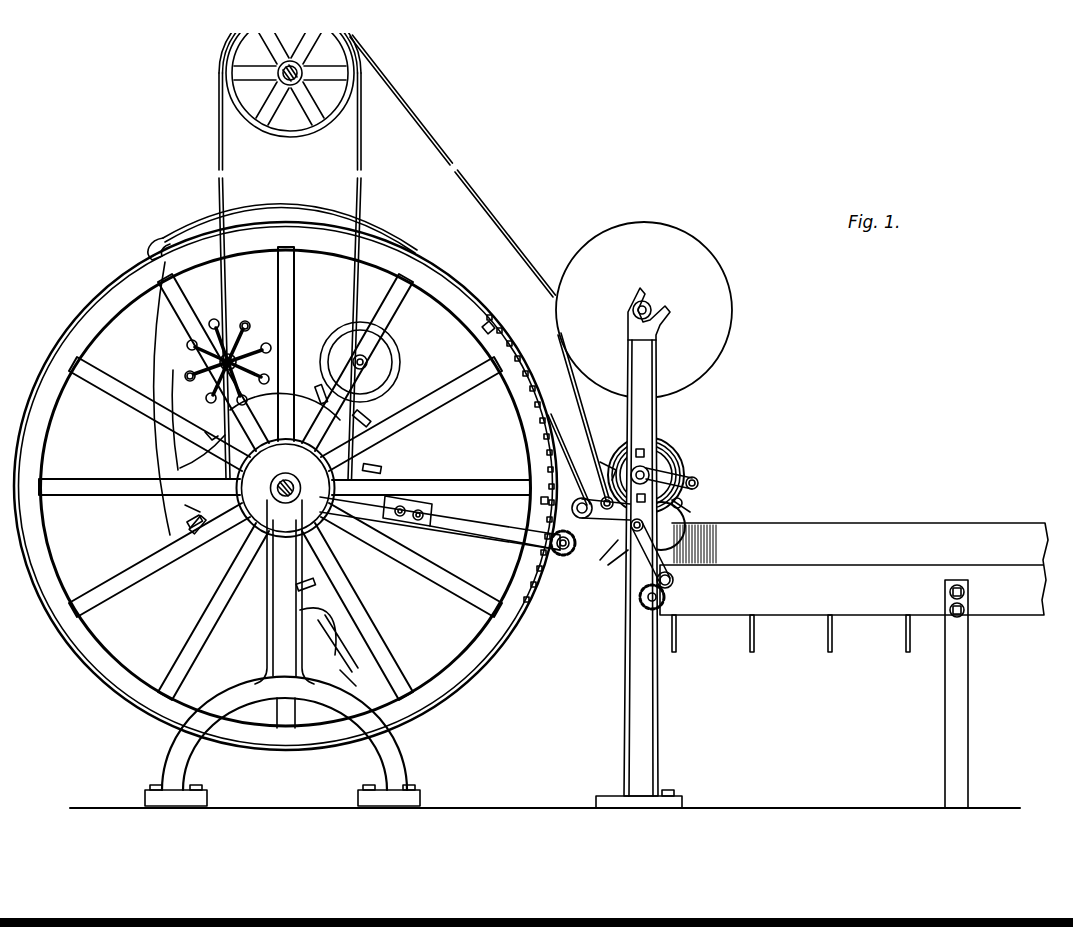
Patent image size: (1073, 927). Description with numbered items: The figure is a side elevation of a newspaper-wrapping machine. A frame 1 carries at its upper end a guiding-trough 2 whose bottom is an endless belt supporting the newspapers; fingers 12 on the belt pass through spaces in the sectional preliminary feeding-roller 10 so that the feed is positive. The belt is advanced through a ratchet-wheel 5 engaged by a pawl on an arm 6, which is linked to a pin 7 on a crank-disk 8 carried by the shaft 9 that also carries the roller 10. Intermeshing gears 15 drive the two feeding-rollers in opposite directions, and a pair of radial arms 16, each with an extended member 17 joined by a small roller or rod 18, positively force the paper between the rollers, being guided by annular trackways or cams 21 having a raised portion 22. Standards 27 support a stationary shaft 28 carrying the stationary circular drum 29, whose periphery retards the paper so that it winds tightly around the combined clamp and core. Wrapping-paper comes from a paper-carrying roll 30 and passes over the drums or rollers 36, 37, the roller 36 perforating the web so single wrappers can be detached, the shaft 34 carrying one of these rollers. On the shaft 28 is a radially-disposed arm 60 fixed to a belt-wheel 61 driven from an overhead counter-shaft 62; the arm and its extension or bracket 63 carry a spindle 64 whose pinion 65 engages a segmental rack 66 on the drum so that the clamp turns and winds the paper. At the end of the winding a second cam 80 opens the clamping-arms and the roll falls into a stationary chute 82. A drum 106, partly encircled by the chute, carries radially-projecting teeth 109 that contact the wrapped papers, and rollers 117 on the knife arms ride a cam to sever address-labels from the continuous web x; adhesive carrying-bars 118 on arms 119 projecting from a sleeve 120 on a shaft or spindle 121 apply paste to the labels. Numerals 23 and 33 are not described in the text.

The frame 1 is at (955, 648).
The guiding-trough 2 is at (880, 602).
The ratchet-wheel 5 is at (666, 603).
The arm 6 is at (672, 587).
The pin 7 is at (620, 546).
The crank-disk 8 is at (630, 561).
The shaft 9 is at (637, 535).
The preliminary feeding-roller 10 is at (686, 520).
The fingers 12 is at (676, 637).
The intermeshing gears 15 is at (600, 541).
The radial arms 16 is at (691, 478).
The extended member 17 is at (683, 499).
The small roller or rod 18 is at (692, 508).
The annular trackways or cams 21 is at (622, 456).
The raised portion 22 is at (650, 471).
The gear 23 is at (662, 446).
The standards 27 is at (188, 760).
The stationary shaft 28 is at (285, 500).
The stationary circular drum 29 is at (86, 316).
The paper-carrying roll 30 is at (718, 270).
The lever 33 is at (612, 472).
The shaft 34 is at (598, 500).
The drum or roller 36 is at (540, 500).
The drum or roller 37 is at (598, 452).
The radially-disposed arm 60 is at (390, 489).
The belt-wheel 61 is at (190, 519).
The overhead counter-shaft 62 is at (304, 80).
The extension or bracket 63 is at (476, 527).
The spindle 64 is at (546, 548).
The pinion 65 is at (546, 531).
The rack 66 is at (545, 452).
The second cam 80 is at (166, 232).
The stationary chute 82 is at (200, 212).
The drum 106 is at (185, 506).
The radially-projecting teeth 109 is at (206, 432).
The rollers 117 is at (190, 467).
The adhesive carrying-bars 118 is at (238, 318).
The arms 119 is at (244, 328).
The sleeve 120 is at (222, 359).
The shaft or spindle 121 is at (188, 371).
The continuous web x is at (404, 400).